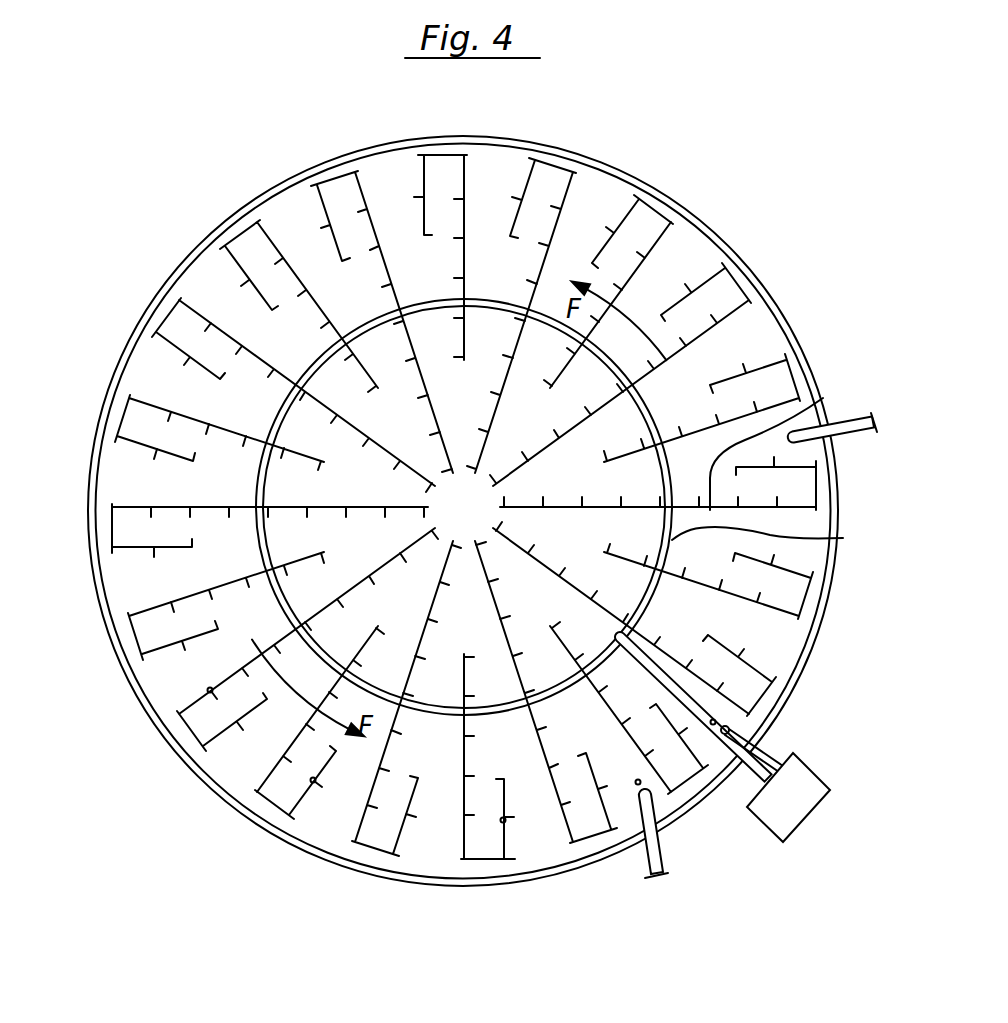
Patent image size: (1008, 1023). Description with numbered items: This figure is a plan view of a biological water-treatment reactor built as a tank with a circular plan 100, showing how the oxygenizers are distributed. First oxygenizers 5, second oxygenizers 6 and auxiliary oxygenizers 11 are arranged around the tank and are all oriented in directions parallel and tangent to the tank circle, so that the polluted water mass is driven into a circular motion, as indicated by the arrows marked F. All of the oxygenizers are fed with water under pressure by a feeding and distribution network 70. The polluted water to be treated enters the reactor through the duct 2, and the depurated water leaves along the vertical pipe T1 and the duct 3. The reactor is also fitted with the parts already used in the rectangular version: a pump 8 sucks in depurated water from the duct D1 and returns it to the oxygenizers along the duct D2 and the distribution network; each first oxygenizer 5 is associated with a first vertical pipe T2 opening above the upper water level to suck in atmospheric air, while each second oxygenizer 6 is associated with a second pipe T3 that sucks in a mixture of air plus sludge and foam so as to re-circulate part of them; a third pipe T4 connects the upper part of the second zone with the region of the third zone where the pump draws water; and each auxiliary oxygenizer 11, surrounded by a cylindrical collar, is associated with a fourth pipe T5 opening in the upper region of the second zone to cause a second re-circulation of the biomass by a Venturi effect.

The circular plan tank 100 is at (212, 240).
The feeding and distribution network 70 is at (815, 402).
The duct 2 is at (859, 414).
The duct 3 is at (652, 862).
The first oxygenizers 5 is at (210, 692).
The second oxygenizers 6 is at (313, 782).
The pump 8 is at (805, 800).
The auxiliary oxygenizers 11 is at (515, 860).
The duct D1 is at (766, 768).
The duct D2 is at (727, 745).
The vertical pipe T1 is at (638, 782).
The first vertical pipe T2 is at (210, 690).
The second pipe T3 is at (313, 780).
The third pipe T4 is at (713, 722).
The fourth pipe T5 is at (503, 820).